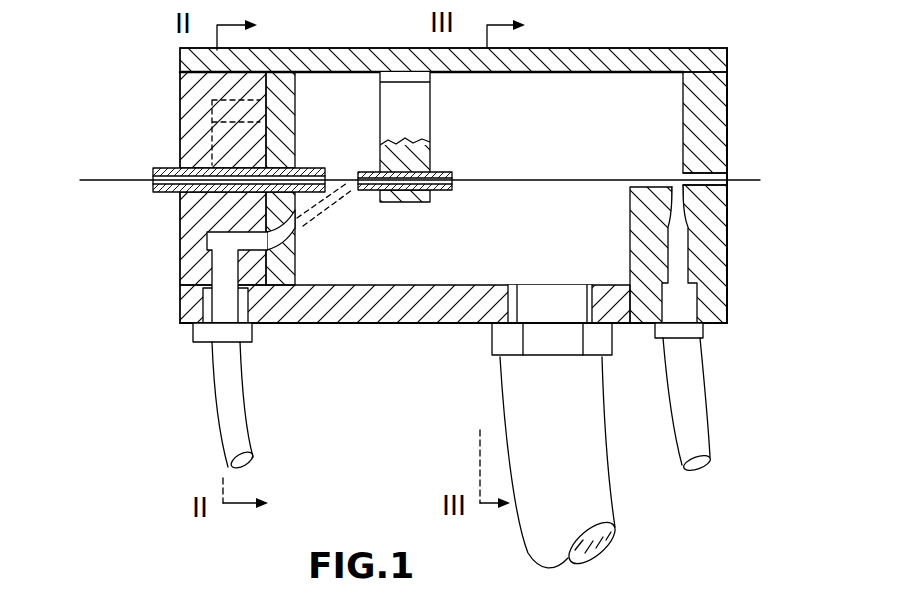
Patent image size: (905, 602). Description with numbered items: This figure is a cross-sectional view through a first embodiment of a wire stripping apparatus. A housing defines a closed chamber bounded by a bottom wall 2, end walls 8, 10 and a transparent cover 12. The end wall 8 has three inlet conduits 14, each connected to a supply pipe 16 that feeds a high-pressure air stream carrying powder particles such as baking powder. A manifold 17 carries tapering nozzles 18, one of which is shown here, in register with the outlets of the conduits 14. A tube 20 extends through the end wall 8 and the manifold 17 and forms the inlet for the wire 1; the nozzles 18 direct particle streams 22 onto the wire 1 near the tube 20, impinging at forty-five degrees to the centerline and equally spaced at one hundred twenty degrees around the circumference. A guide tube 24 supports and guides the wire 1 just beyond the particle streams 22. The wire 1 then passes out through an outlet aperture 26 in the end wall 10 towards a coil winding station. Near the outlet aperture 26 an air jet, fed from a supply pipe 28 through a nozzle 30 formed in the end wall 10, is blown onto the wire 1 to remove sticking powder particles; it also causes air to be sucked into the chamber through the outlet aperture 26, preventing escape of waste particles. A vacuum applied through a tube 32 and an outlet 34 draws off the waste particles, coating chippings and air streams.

The wire 1 is at (100, 180).
The bottom wall 2 is at (352, 330).
The end wall 8 is at (187, 235).
The end wall 10 is at (693, 90).
The transparent cover 12 is at (317, 53).
The inlet conduit 14 is at (207, 252).
The supply pipe 16 is at (257, 450).
The manifold 17 is at (280, 93).
The tapering nozzle 18 is at (288, 252).
The tube 20 is at (155, 170).
The particle stream 22 is at (323, 200).
The guide tube 24 is at (447, 172).
The outlet aperture 26 is at (730, 173).
The supply pipe 28 is at (685, 387).
The nozzle 30 is at (685, 215).
The tube 32 is at (593, 497).
The outlet 34 is at (530, 285).